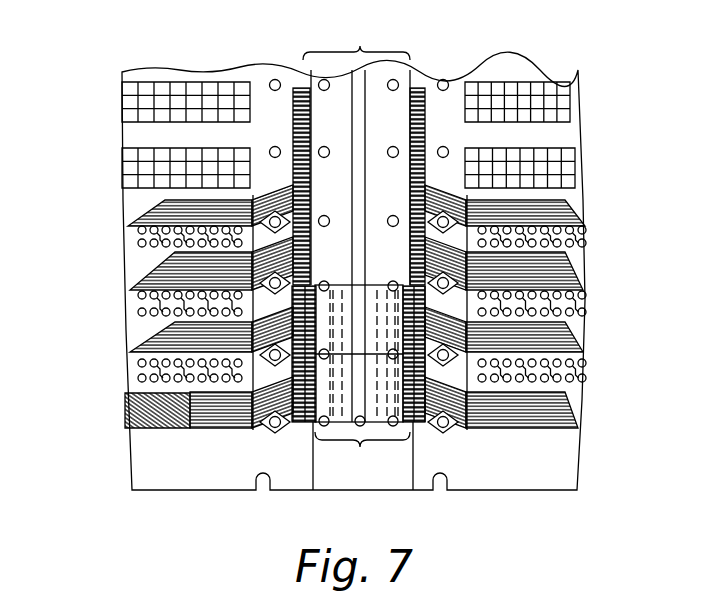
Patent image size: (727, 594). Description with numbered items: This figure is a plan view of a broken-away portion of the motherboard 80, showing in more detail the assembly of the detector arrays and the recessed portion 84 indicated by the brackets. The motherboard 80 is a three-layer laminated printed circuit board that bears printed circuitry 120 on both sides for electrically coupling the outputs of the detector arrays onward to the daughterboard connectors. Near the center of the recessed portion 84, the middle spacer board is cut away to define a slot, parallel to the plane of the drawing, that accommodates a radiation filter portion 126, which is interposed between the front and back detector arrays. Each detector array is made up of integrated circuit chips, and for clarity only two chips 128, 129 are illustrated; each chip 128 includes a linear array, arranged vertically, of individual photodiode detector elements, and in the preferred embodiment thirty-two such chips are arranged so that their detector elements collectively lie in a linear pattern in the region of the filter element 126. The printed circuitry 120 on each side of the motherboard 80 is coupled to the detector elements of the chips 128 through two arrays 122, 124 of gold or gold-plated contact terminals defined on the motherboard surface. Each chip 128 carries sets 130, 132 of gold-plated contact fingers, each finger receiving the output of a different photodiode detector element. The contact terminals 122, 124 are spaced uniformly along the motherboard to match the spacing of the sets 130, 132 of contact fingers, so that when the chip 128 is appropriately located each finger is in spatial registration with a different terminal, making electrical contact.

The motherboard 80 is at (202, 71).
The recessed portion 84 is at (358, 253).
The printed circuitry 120 is at (192, 202).
The array of contact terminals 122 is at (300, 87).
The array of contact terminals 124 is at (418, 87).
The radiation filter portion 126 is at (360, 140).
The integrated circuit chip 128 is at (377, 284).
The integrated circuit chip 129 is at (337, 380).
The set of contact fingers 130 is at (352, 354).
The set of contact fingers 132 is at (386, 354).